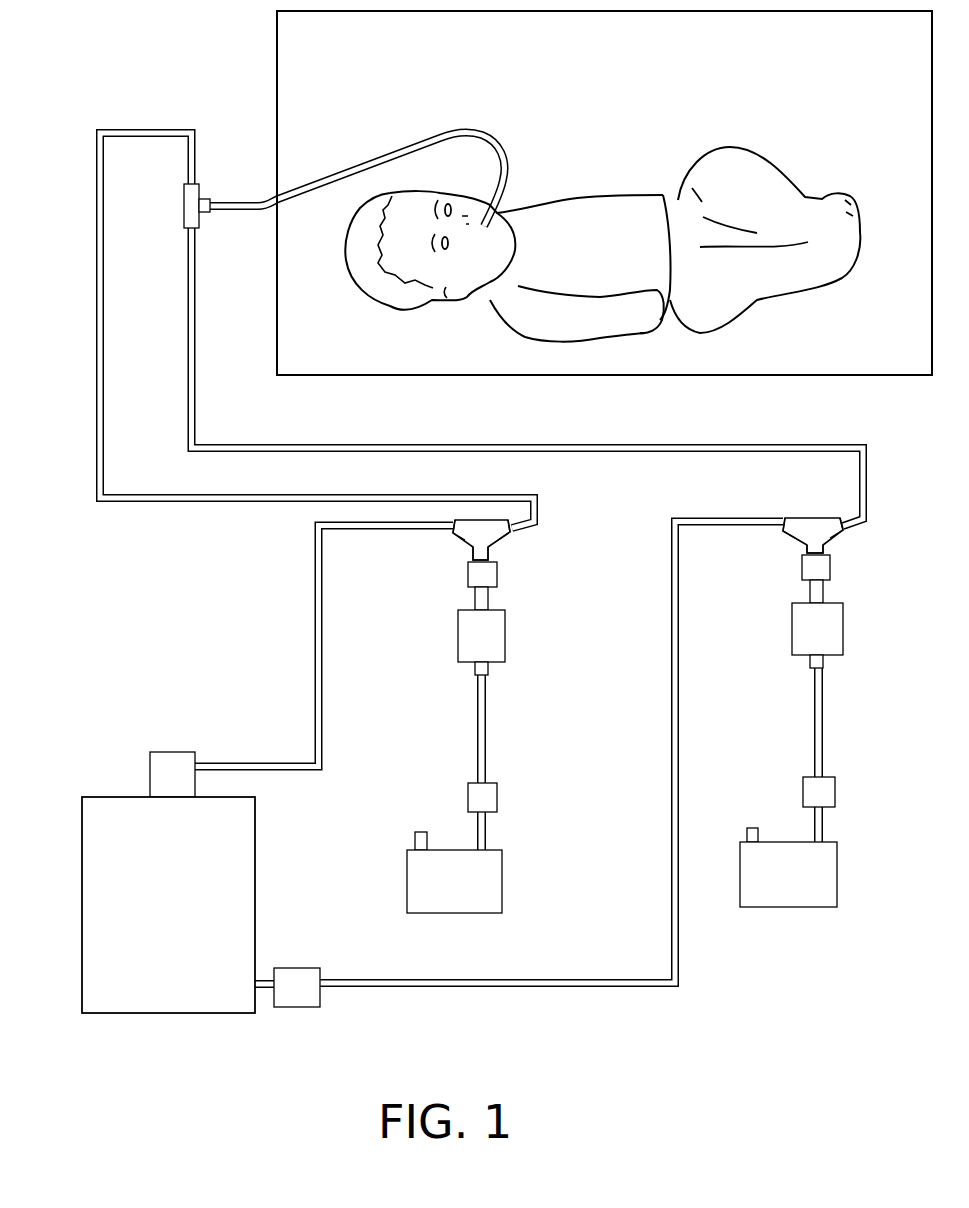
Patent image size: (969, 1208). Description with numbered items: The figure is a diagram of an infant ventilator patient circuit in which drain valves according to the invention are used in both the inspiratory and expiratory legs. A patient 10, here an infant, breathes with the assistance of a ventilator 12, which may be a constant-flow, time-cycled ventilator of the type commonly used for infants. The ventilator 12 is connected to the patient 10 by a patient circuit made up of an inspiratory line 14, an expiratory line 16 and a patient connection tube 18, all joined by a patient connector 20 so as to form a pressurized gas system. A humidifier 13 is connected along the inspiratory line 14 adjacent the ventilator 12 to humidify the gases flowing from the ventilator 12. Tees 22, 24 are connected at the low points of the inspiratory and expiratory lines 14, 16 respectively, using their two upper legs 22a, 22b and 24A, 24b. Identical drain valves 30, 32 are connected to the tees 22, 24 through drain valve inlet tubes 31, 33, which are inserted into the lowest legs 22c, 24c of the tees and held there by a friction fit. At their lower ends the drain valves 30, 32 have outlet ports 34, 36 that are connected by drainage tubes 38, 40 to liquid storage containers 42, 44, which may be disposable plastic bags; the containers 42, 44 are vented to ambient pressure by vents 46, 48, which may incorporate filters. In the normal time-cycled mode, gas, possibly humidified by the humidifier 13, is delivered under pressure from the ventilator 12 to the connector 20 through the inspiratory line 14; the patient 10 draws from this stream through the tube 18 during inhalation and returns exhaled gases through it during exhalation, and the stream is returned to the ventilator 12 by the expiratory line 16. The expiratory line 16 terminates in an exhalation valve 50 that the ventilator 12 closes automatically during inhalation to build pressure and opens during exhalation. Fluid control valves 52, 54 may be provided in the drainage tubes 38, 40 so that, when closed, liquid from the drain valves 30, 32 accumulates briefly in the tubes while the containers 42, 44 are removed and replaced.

The patient 10 is at (603, 195).
The ventilator 12 is at (150, 1010).
The humidifier 13 is at (300, 1008).
The inspiratory line 14 is at (538, 987).
The expiratory line 16 is at (314, 640).
The patient connection tube 18 is at (376, 164).
The patient connector 20 is at (184, 205).
The tee 22 is at (815, 518).
The upper leg 22a is at (840, 525).
The upper leg 22b is at (795, 517).
The lowest leg 22c is at (805, 536).
The tee 24 is at (483, 534).
The upper leg 24A is at (506, 538).
The upper leg 24b is at (456, 538).
The lowest leg 24c is at (471, 553).
The drain valve 30 is at (838, 630).
The drain valve inlet tube 31 is at (830, 568).
The drain valve 32 is at (495, 638).
The drain valve inlet tube 33 is at (490, 575).
The outlet port 34 is at (825, 662).
The outlet port 36 is at (470, 668).
The drainage tube 38 is at (823, 728).
The drainage tube 40 is at (487, 733).
The liquid storage container 42 is at (797, 905).
The liquid storage container 44 is at (457, 905).
The vent 46 is at (747, 834).
The vent 48 is at (415, 836).
The exhalation valve 50 is at (150, 762).
The fluid control valve 52 is at (836, 788).
The fluid control valve 54 is at (497, 797).